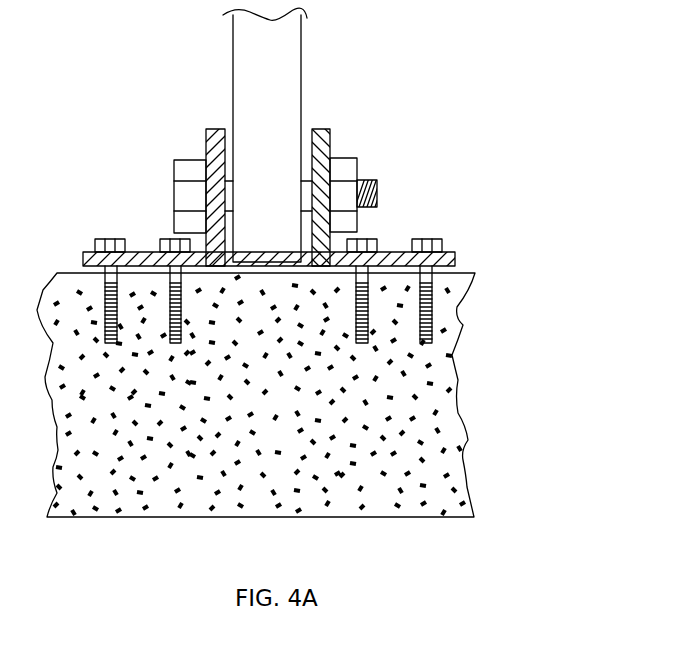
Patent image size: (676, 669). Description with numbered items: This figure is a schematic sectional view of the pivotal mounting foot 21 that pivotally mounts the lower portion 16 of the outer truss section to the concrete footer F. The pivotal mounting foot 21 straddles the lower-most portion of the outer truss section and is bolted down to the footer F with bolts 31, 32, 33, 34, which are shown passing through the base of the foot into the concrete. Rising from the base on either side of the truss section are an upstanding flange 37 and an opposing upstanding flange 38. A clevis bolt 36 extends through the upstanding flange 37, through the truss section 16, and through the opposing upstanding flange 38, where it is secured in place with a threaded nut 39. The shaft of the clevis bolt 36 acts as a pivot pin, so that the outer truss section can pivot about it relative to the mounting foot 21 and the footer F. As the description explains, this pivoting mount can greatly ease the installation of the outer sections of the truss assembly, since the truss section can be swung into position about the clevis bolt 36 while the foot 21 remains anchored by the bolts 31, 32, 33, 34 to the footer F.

The lower portion of outer truss section 16 is at (290, 48).
The pivotal mounting foot 21 is at (425, 167).
The bolt 31 is at (435, 238).
The bolt 32 is at (368, 238).
The bolt 33 is at (168, 237).
The bolt 34 is at (110, 237).
The clevis bolt 36 is at (192, 200).
The upstanding flange 37 is at (212, 134).
The opposing upstanding flange 38 is at (325, 130).
The threaded nut 39 is at (342, 170).
The footer F is at (435, 391).